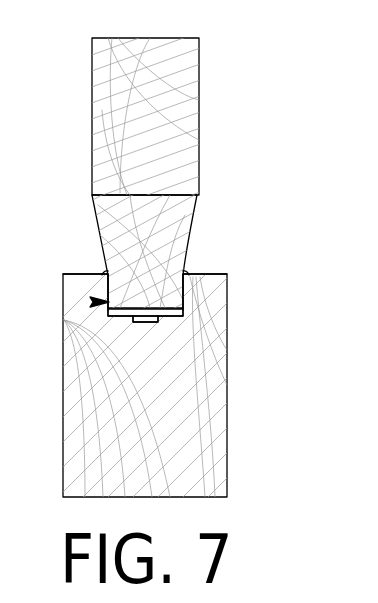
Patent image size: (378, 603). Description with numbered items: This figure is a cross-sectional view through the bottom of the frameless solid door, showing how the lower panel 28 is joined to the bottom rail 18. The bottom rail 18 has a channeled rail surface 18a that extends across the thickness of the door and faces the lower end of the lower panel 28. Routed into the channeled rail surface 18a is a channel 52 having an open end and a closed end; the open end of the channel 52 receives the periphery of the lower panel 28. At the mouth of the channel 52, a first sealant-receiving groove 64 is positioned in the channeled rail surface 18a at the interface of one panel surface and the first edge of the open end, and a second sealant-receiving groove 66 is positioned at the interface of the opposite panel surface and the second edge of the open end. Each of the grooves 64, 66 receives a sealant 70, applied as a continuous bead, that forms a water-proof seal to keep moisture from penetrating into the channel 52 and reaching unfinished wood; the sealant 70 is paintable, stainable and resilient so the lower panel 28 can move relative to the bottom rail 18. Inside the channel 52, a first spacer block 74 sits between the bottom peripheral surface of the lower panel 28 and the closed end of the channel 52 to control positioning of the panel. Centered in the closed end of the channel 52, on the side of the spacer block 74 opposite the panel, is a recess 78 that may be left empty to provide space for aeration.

The lower panel 28 is at (185, 88).
The bottom rail 18 is at (208, 404).
The channeled rail surface 18a is at (75, 274).
The sealant 70 is at (105, 275).
The first sealant-receiving groove 64 is at (107, 278).
The channel 52 is at (92, 302).
The second sealant-receiving groove 66 is at (185, 277).
The first spacer block 74 is at (112, 313).
The recess 78 is at (145, 323).